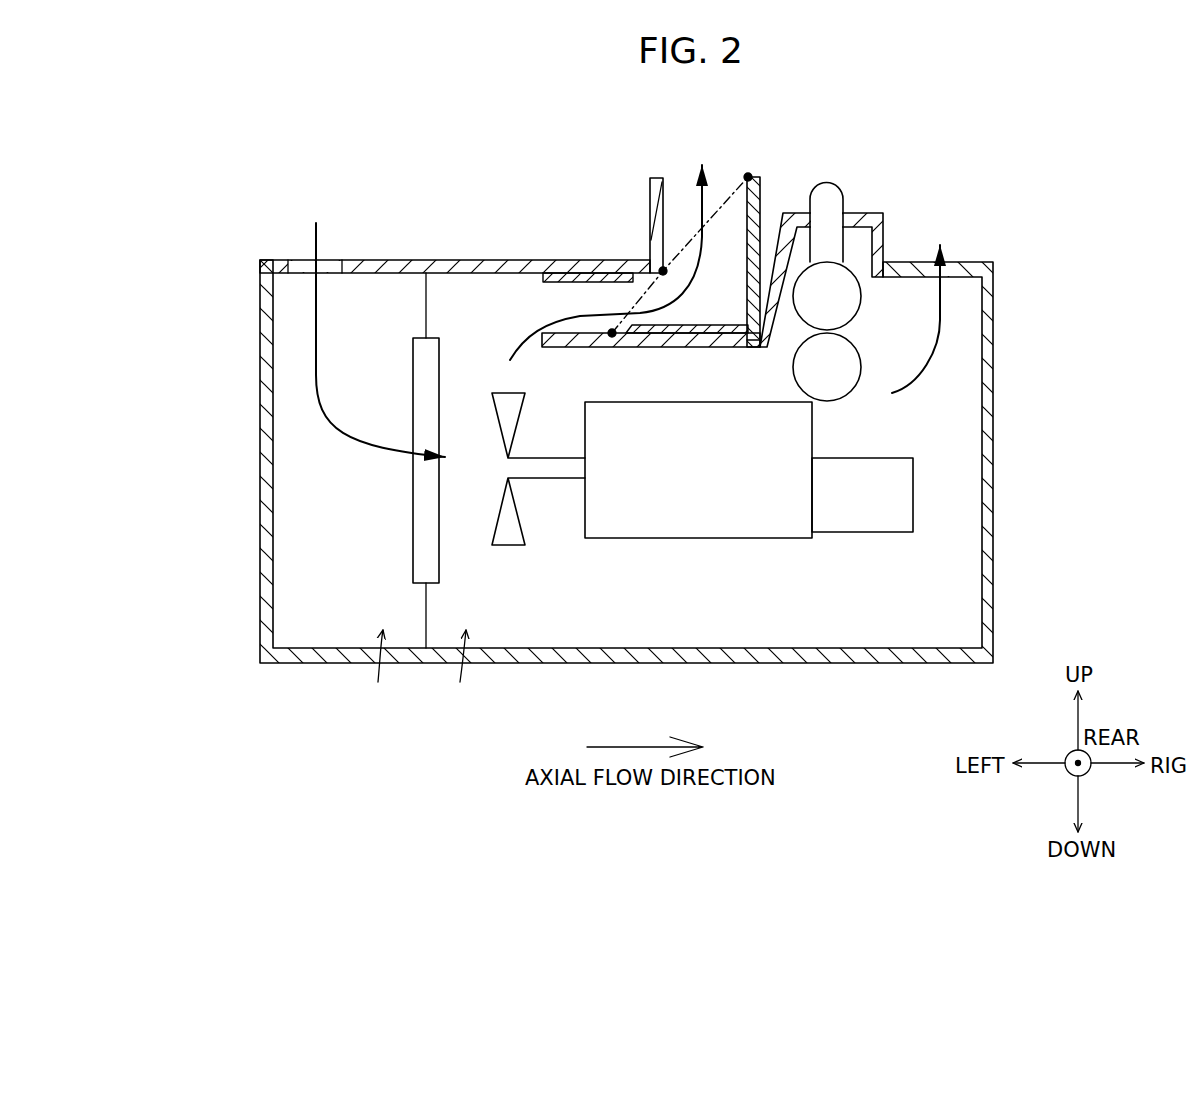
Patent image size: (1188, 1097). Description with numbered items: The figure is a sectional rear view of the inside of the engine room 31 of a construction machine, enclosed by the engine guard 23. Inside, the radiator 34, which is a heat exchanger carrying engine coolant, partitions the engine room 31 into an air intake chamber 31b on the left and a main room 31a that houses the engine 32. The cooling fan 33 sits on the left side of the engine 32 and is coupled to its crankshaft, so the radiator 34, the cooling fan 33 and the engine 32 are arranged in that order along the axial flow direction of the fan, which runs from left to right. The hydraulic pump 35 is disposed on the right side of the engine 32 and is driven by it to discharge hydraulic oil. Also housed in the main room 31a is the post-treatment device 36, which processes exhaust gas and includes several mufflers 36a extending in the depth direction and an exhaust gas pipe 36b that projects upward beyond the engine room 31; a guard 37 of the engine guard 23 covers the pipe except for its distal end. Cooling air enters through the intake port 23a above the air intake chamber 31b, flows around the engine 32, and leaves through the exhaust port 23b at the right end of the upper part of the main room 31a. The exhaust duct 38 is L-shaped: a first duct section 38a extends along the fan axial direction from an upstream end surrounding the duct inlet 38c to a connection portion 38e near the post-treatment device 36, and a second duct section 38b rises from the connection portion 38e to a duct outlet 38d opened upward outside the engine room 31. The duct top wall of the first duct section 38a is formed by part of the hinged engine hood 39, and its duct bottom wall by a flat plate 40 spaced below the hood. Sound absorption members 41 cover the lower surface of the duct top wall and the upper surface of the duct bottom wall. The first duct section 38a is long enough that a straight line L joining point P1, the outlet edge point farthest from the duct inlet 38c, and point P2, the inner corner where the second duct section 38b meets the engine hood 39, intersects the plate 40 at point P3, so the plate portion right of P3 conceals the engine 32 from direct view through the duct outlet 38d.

The engine guard 23 is at (268, 463).
The intake port 23a is at (300, 265).
The exhaust port 23b is at (913, 265).
The engine room 31 is at (423, 710).
The main room 31a is at (464, 683).
The air intake chamber 31b is at (386, 683).
The engine 32 is at (690, 524).
The cooling fan 33 is at (508, 534).
The radiator 34 is at (422, 507).
The hydraulic pump 35 is at (876, 524).
The post-treatment device 36 is at (856, 237).
The mufflers 36a is at (845, 297).
The exhaust gas pipe 36b is at (828, 192).
The guard 37 is at (855, 215).
The exhaust duct 38 is at (621, 203).
The first duct section 38a is at (626, 359).
The second duct section 38b is at (764, 205).
The duct inlet 38c is at (540, 305).
The duct outlet 38d is at (678, 174).
The connection portion 38e is at (737, 310).
The engine hood 39 is at (478, 267).
The plate 40 is at (697, 349).
The sound absorption members 41 is at (580, 276).
The point P1 is at (748, 173).
The point P2 is at (661, 268).
The point P3 is at (612, 330).
The straight line L is at (717, 214).